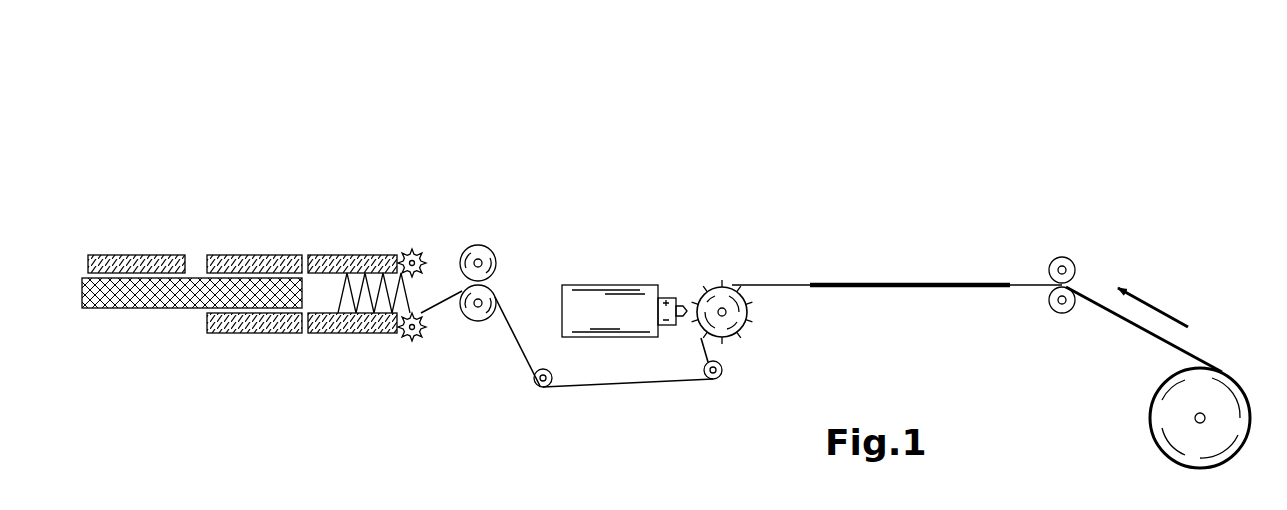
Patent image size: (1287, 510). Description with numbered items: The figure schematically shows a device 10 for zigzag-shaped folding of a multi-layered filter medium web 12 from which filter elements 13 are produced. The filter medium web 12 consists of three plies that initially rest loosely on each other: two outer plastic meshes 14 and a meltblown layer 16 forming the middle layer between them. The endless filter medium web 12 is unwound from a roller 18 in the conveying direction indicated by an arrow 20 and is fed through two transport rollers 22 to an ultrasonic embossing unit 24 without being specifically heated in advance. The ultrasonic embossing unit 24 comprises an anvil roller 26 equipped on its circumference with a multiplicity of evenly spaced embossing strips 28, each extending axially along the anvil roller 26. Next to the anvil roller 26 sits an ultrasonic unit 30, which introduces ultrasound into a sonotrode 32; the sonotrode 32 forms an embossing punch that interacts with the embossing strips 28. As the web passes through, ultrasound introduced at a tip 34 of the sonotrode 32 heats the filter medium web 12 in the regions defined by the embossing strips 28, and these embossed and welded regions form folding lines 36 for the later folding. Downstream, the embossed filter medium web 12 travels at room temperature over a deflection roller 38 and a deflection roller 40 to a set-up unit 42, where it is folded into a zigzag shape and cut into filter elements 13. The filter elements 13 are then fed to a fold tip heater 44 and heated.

The device 10 is at (255, 141).
The filter medium web 12 is at (1153, 335).
The filter element 13 is at (132, 290).
The plastic meshes 14 is at (897, 244).
The meltblown layer 16 is at (953, 227).
The roller 18 is at (1230, 370).
The arrow 20 is at (1145, 297).
The transport rollers 22 is at (1056, 260).
The ultrasonic embossing unit 24 is at (699, 274).
The anvil roller 26 is at (764, 299).
The embossing strips 28 is at (757, 305).
The ultrasonic unit 30 is at (590, 295).
The sonotrode 32 is at (666, 298).
The tip 34 is at (682, 310).
The folding lines 36 is at (387, 250).
The deflection roller 38 is at (713, 380).
The deflection roller 40 is at (540, 388).
The set-up unit 42 is at (342, 247).
The fold tip heater 44 is at (199, 229).